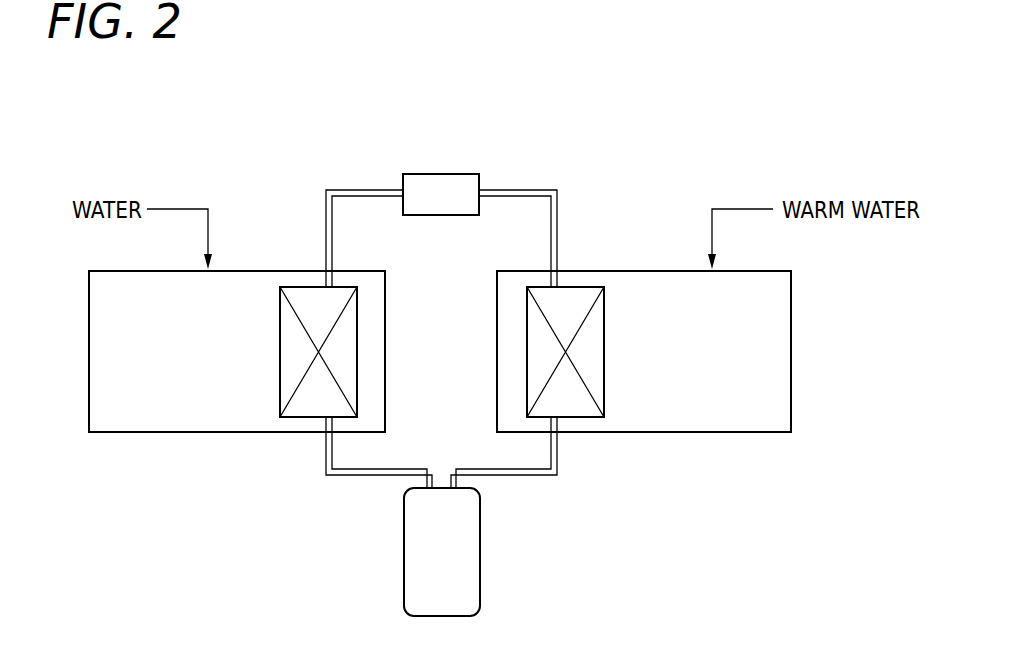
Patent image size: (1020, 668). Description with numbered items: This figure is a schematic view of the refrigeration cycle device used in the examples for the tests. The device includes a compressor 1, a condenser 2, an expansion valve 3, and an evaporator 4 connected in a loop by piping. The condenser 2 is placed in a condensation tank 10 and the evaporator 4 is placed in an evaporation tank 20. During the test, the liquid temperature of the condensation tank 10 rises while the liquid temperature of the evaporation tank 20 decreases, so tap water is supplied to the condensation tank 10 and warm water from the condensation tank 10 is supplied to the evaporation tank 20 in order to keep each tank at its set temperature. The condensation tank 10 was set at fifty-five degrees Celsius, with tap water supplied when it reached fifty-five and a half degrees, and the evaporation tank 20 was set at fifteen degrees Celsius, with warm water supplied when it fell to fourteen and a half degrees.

The compressor 1 is at (480, 557).
The condenser 2 is at (280, 352).
The expansion valve 3 is at (440, 173).
The evaporator 4 is at (604, 351).
The condensation tank 10 is at (142, 432).
The evaporation tank 20 is at (701, 432).